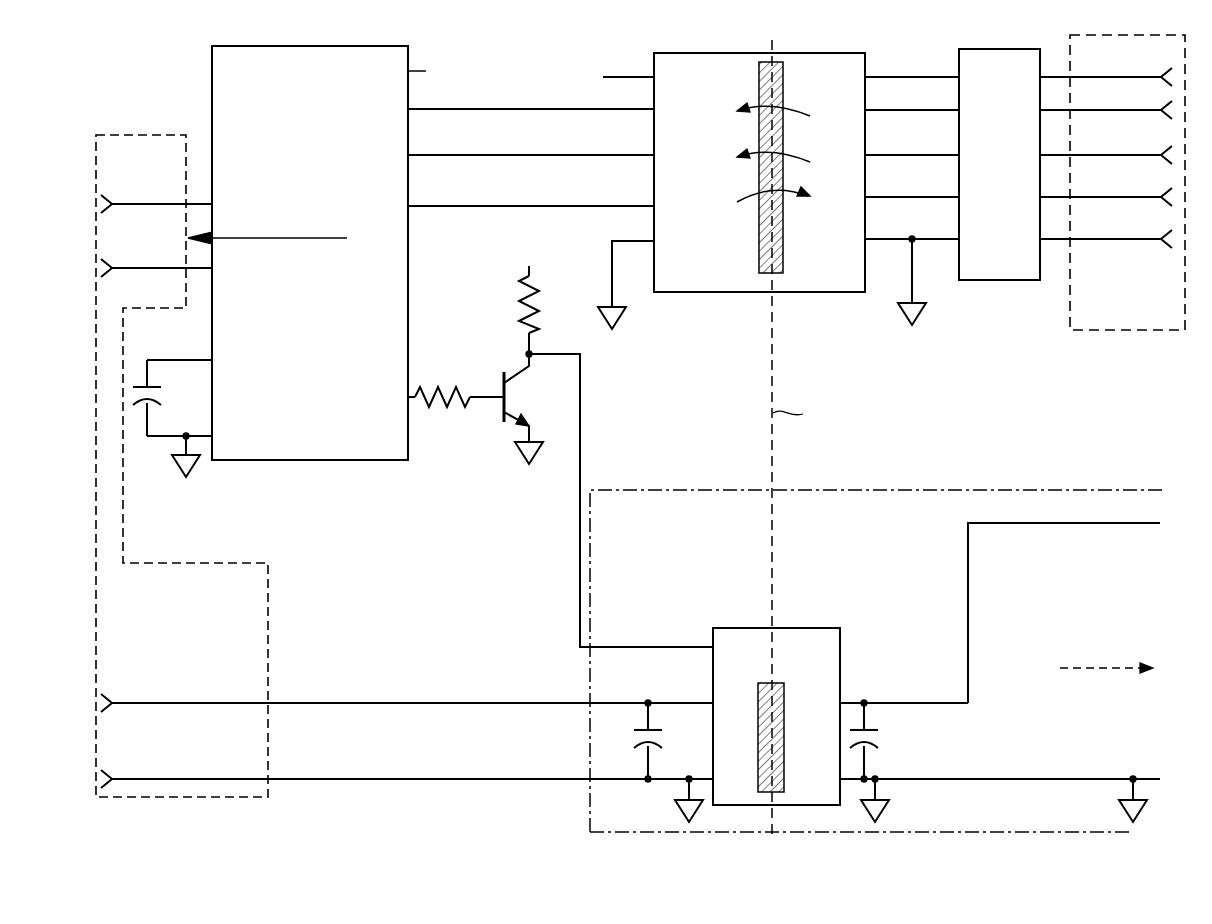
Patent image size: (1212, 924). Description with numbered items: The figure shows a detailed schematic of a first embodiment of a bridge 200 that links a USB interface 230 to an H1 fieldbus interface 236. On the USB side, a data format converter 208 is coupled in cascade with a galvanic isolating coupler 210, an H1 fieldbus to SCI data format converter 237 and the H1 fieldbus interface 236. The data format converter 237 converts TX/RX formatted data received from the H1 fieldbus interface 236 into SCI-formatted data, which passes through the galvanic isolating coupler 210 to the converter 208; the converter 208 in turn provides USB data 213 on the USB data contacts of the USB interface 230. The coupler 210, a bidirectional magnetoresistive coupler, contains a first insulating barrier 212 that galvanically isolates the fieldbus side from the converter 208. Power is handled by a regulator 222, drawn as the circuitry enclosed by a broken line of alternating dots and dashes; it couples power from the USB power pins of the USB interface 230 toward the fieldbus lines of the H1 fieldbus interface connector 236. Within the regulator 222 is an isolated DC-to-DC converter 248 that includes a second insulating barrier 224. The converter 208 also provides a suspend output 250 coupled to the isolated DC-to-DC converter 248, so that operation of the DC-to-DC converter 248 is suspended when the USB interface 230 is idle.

The bridge 200 is at (523, 807).
The data format converter 208 is at (408, 266).
The galvanic isolating coupler 210 is at (727, 53).
The first insulating barrier 212 is at (780, 62).
The USB data 213 is at (262, 238).
The regulator 222 is at (590, 678).
The second insulating barrier 224 is at (780, 683).
The USB interface 230 is at (113, 135).
The H1 fieldbus interface 236 is at (1105, 330).
The H1 fieldbus to SCI data format converter 237 is at (1022, 280).
The isolated DC-to-DC converter 248 is at (742, 628).
The suspend output 250 is at (580, 420).